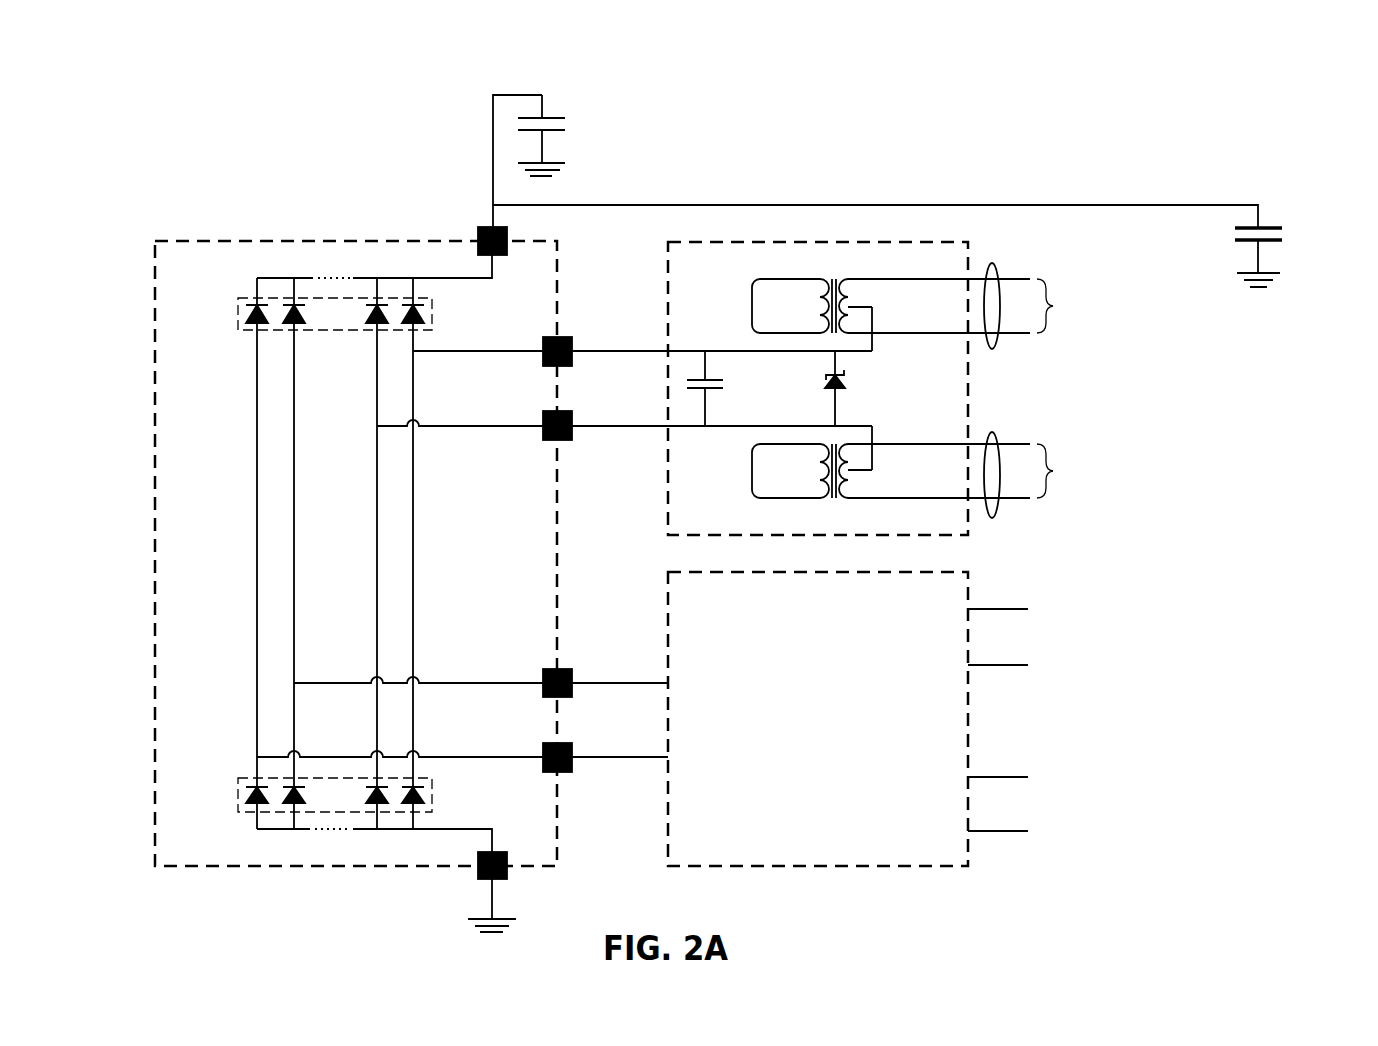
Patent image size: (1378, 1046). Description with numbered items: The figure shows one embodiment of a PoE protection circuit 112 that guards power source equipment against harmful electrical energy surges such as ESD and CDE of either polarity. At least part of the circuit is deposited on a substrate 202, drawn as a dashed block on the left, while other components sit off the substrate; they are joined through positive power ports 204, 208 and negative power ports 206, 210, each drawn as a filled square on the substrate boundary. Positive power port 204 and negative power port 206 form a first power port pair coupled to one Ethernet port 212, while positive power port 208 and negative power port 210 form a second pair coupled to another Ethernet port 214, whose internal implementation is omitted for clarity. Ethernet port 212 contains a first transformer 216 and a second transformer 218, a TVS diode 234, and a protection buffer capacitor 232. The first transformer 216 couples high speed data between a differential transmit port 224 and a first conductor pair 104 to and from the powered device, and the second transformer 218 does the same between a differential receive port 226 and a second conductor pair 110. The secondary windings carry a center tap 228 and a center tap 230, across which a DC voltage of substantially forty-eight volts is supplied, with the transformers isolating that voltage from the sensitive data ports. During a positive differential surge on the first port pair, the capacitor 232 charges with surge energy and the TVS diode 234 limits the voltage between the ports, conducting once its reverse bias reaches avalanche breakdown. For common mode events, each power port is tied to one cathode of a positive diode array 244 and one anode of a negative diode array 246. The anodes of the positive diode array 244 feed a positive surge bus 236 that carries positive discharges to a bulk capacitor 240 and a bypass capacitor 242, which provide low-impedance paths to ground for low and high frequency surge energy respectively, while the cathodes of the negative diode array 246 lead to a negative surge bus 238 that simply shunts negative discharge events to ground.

The PoE protection circuit 112 is at (703, 119).
The substrate 202 is at (312, 241).
The positive power port 204 is at (542, 340).
The negative power port 206 is at (542, 440).
The positive power port 208 is at (542, 670).
The negative power port 210 is at (542, 772).
The Ethernet port 212 is at (968, 535).
The Ethernet port 214 is at (968, 866).
The first transformer 216 is at (860, 284).
The second transformer 218 is at (860, 491).
The differential transmit port 224 is at (752, 279).
The differential receive port 226 is at (752, 444).
The center tap 228 is at (878, 306).
The center tap 230 is at (878, 471).
The protection buffer capacitor 232 is at (728, 384).
The transient-voltage-suppression diode 234 is at (848, 384).
The positive surge bus 236 is at (878, 205).
The negative surge bus 238 is at (278, 829).
The bulk capacitor 240 is at (1285, 233).
The bypass capacitor 242 is at (568, 124).
The positive diode array 244 is at (238, 318).
The negative diode array 246 is at (238, 785).
The first conductor pair 104 is at (1000, 264).
The second conductor pair 110 is at (1000, 434).